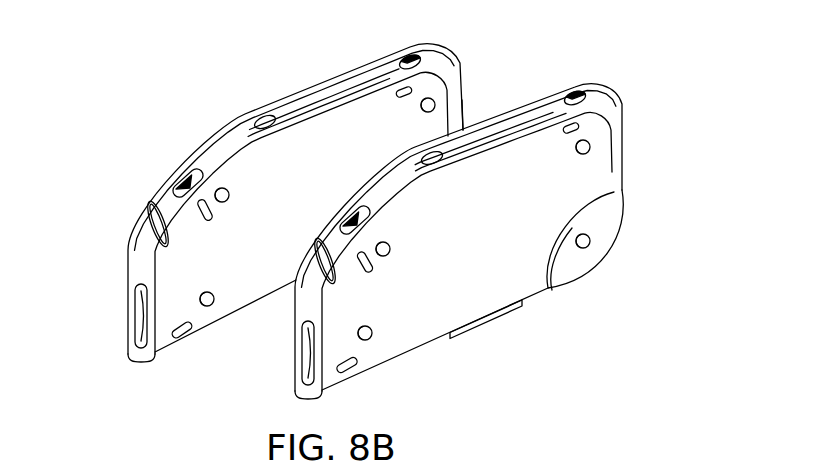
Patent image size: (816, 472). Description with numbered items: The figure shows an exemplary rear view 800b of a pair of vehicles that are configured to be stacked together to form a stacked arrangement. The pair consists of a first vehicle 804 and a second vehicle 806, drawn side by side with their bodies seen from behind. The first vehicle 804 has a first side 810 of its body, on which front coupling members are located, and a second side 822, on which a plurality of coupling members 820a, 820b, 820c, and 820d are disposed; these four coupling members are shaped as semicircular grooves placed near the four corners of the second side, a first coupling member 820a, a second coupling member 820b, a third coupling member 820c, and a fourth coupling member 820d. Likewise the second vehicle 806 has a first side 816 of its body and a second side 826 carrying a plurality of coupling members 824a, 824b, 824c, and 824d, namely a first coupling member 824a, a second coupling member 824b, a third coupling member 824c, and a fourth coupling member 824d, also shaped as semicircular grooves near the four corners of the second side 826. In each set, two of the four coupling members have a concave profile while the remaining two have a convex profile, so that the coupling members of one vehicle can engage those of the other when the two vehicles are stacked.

The rear view 800b is at (122, 46).
The first vehicle 804 is at (142, 350).
The second vehicle 806 is at (294, 390).
The first side 810 is at (266, 104).
The first side 816 is at (541, 97).
The second side 822 is at (320, 139).
The second side 826 is at (614, 112).
The first coupling member 820a is at (431, 104).
The second coupling member 820b is at (450, 112).
The third coupling member 820c is at (206, 300).
The fourth coupling member 820d is at (221, 191).
The first coupling member 824a is at (592, 150).
The second coupling member 824b is at (591, 243).
The third coupling member 824c is at (377, 334).
The fourth coupling member 824d is at (392, 252).